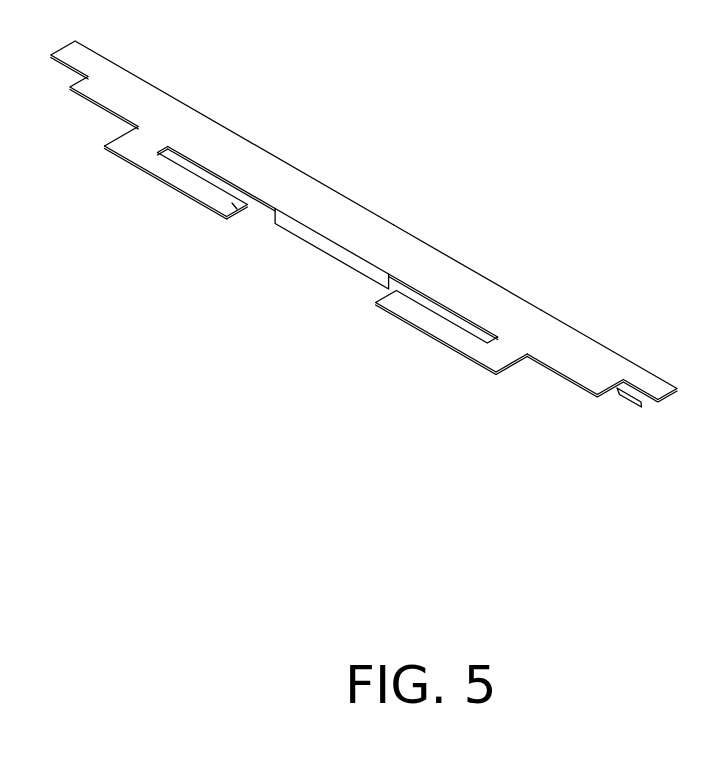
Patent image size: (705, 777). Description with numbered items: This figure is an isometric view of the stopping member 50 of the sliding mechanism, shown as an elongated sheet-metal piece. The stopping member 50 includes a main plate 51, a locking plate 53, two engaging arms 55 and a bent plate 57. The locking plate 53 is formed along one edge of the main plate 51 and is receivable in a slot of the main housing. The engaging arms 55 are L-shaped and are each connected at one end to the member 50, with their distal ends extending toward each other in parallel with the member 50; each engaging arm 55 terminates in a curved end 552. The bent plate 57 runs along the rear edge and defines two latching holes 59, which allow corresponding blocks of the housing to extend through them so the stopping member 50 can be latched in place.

The stopping member 50 is at (318, 141).
The main plate 51 is at (571, 363).
The locking plate 53 is at (347, 262).
The engaging arm 55 is at (202, 185).
The curved end 552 is at (246, 214).
The bent plate 57 is at (408, 231).
The latching hole 59 is at (543, 313).